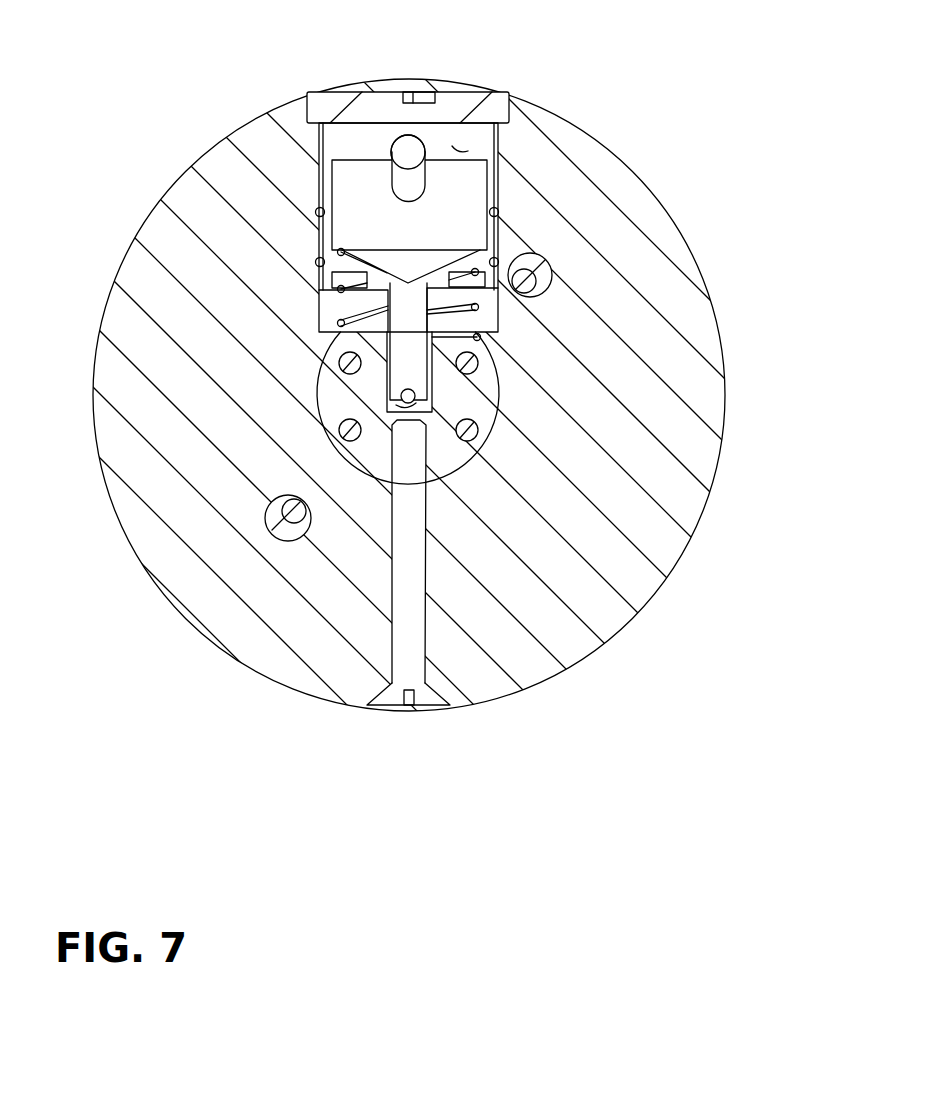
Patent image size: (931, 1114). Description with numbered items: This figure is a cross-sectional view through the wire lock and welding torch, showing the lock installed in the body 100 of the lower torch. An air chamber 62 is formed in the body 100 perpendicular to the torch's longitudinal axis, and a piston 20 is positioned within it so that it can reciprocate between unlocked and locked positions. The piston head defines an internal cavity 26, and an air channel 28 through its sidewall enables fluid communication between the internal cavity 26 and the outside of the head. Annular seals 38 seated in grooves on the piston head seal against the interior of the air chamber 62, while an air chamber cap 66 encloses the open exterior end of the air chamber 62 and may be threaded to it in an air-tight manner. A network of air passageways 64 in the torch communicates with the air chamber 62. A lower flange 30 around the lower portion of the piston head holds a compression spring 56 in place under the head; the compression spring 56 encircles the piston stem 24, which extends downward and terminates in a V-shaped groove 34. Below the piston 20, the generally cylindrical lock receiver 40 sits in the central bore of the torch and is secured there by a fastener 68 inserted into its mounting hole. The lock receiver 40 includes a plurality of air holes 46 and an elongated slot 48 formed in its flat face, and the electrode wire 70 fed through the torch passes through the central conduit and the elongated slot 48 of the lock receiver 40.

The piston 20 is at (500, 188).
The stem 24 is at (390, 366).
The internal cavity 26 is at (317, 262).
The air channel 28 is at (390, 188).
The lower flange 30 is at (341, 289).
The V-shaped groove 34 is at (416, 398).
The annular seal 38 is at (317, 212).
The lock receiver 40 is at (466, 476).
The air holes 46 is at (342, 438).
The elongated slot 48 is at (435, 390).
The compression spring 56 is at (477, 307).
The air chamber 62 is at (452, 146).
The air passageways 64 is at (405, 147).
The air chamber cap 66 is at (470, 98).
The fastener 68 is at (390, 703).
The electrode wire 70 is at (387, 410).
The body 100 is at (706, 259).